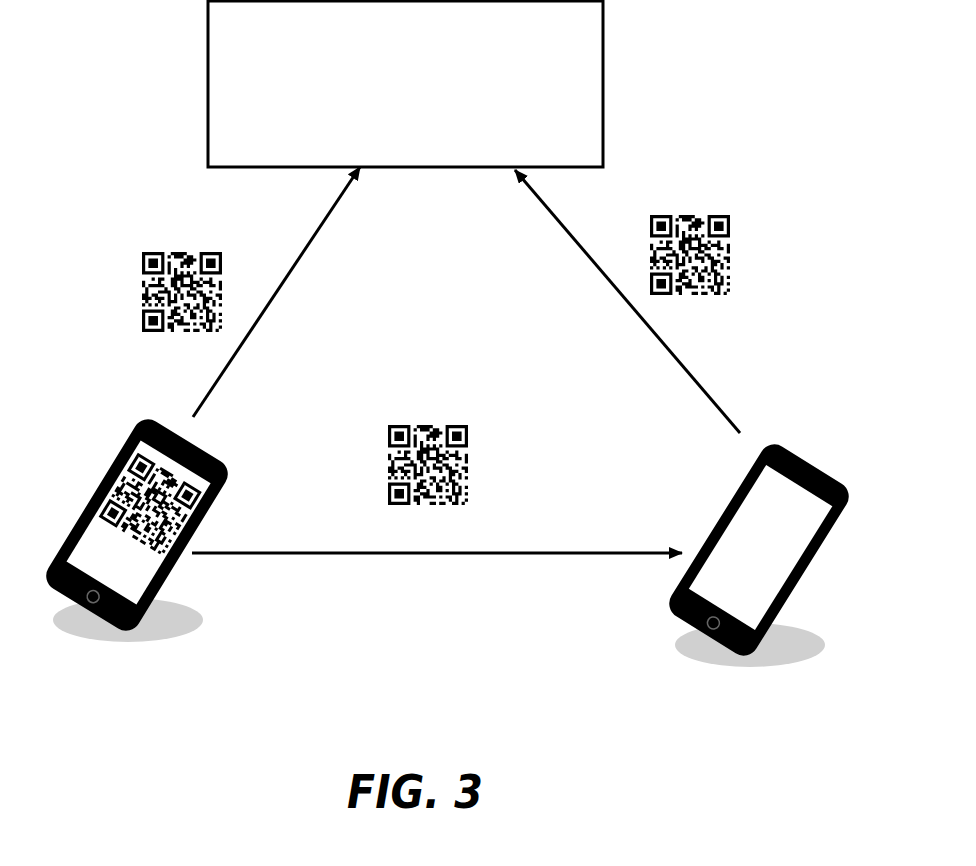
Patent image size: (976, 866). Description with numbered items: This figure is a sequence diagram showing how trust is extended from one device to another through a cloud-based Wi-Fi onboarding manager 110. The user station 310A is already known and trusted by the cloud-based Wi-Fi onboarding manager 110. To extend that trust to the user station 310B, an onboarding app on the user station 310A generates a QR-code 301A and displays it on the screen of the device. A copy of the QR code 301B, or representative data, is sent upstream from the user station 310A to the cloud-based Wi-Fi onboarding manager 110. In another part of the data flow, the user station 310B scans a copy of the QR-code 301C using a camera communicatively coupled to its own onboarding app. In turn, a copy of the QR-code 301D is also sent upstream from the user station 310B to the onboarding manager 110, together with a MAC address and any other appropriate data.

The cloud-based Wi-Fi onboarding manager 110 is at (405, 84).
The QR-code 301A is at (141, 517).
The copy of the QR code 301B is at (182, 306).
The copy of the QR-code 301C is at (428, 484).
The copy of the QR-code 301D is at (690, 279).
The user station 310A is at (131, 539).
The user station 310B is at (742, 553).